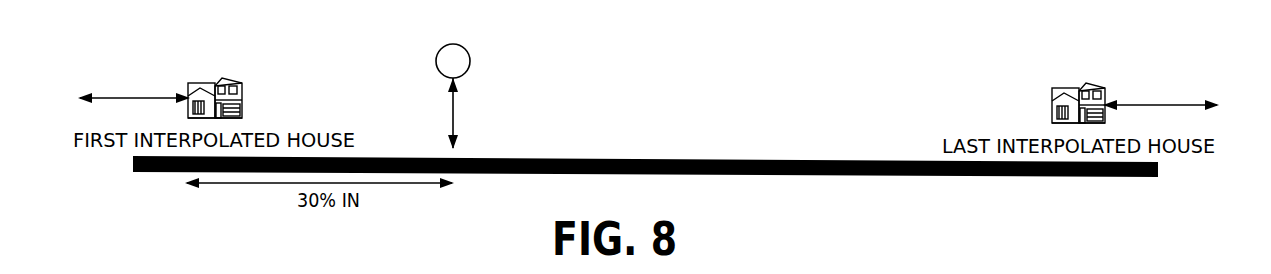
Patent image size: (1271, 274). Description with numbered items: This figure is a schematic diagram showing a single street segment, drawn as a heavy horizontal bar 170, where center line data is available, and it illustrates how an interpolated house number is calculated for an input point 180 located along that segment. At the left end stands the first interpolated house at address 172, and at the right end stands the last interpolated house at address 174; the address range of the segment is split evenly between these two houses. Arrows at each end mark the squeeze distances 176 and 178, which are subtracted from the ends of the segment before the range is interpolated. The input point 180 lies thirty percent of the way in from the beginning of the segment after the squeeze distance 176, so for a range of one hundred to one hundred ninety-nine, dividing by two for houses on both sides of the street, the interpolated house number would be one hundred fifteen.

The interpolation timeline bar 170 is at (675, 157).
The address 172 is at (248, 97).
The address 174 is at (1068, 82).
The squeeze distance 176 is at (155, 63).
The squeeze distance 178 is at (1157, 72).
The input point 180 is at (471, 52).